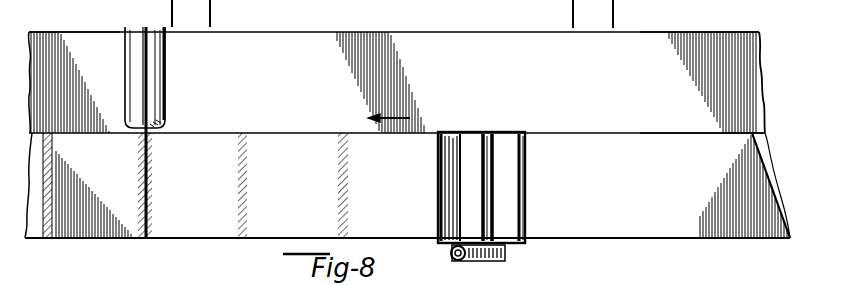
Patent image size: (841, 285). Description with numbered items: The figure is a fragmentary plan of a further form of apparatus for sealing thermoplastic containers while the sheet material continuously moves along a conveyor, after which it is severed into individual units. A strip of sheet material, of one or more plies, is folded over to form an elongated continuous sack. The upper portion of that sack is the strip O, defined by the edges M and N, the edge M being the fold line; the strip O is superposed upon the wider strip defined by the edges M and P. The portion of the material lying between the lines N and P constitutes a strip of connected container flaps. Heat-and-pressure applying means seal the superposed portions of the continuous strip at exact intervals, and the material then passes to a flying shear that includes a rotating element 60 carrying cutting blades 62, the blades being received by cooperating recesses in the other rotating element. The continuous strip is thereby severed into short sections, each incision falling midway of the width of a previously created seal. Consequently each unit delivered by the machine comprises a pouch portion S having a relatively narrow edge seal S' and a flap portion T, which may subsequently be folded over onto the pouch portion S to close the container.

The flap portion T is at (84, 33).
The edge P is at (713, 34).
The edge N is at (709, 134).
The upper chamber Q is at (640, 96).
The strip O is at (611, 180).
The pouch portion S is at (195, 185).
The edge seal S' is at (153, 185).
The edge M is at (633, 242).
The rotating element 60 is at (157, 107).
The cutting blades 62 is at (147, 85).